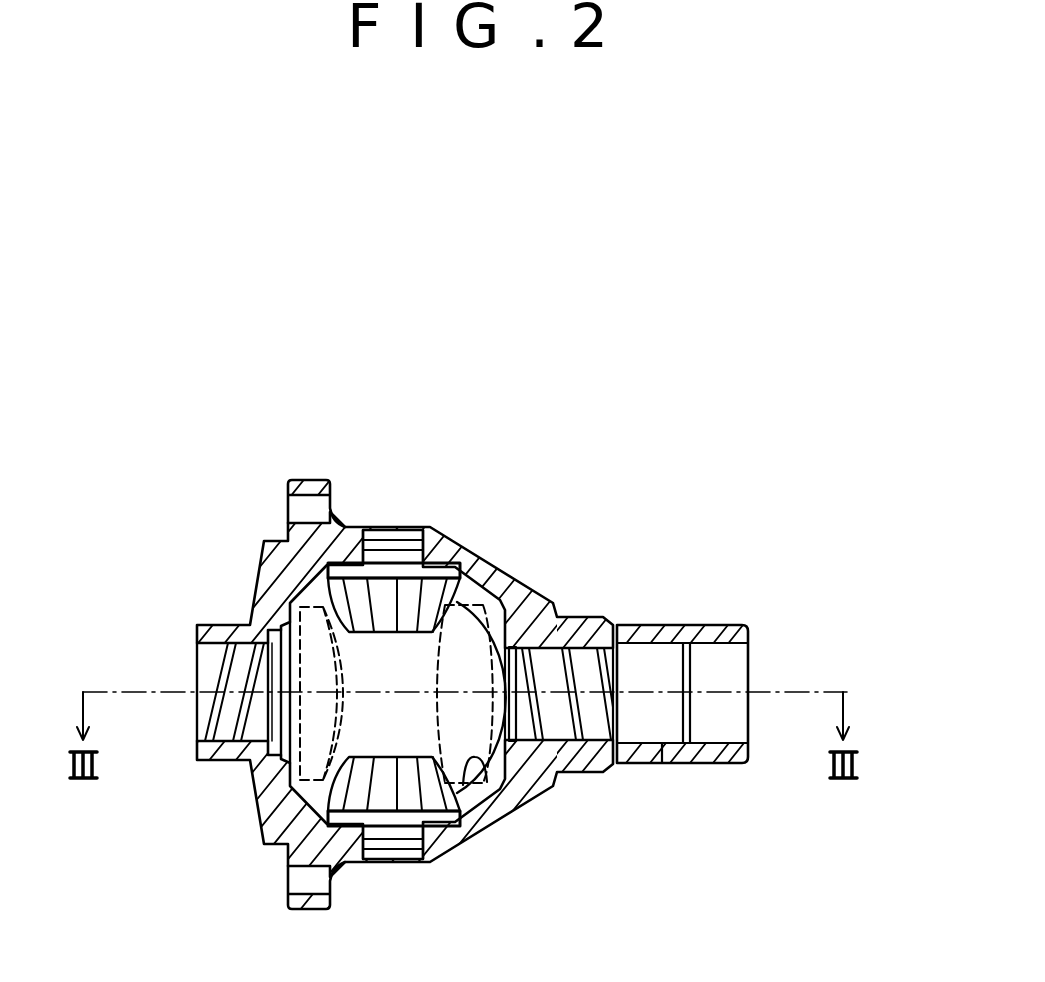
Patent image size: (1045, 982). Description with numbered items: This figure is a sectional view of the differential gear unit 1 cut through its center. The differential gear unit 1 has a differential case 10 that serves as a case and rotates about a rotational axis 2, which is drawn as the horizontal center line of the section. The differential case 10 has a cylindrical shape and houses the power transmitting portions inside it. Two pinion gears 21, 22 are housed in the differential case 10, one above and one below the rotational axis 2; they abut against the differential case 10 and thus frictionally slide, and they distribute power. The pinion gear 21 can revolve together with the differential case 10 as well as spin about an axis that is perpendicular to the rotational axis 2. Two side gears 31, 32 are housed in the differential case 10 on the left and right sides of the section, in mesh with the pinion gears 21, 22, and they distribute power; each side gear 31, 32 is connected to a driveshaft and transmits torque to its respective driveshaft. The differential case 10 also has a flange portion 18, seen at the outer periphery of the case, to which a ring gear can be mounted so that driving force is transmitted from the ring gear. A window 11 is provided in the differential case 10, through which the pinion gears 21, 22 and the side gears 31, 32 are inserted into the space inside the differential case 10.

The differential gear unit 1 is at (669, 417).
The rotational axis 2 is at (788, 692).
The differential case 10 is at (272, 564).
The window 11 is at (487, 790).
The flange portion 18 is at (303, 483).
The pinion gear 21 is at (397, 570).
The pinion gear 22 is at (392, 826).
The side gear 31 is at (495, 645).
The side gear 32 is at (286, 626).